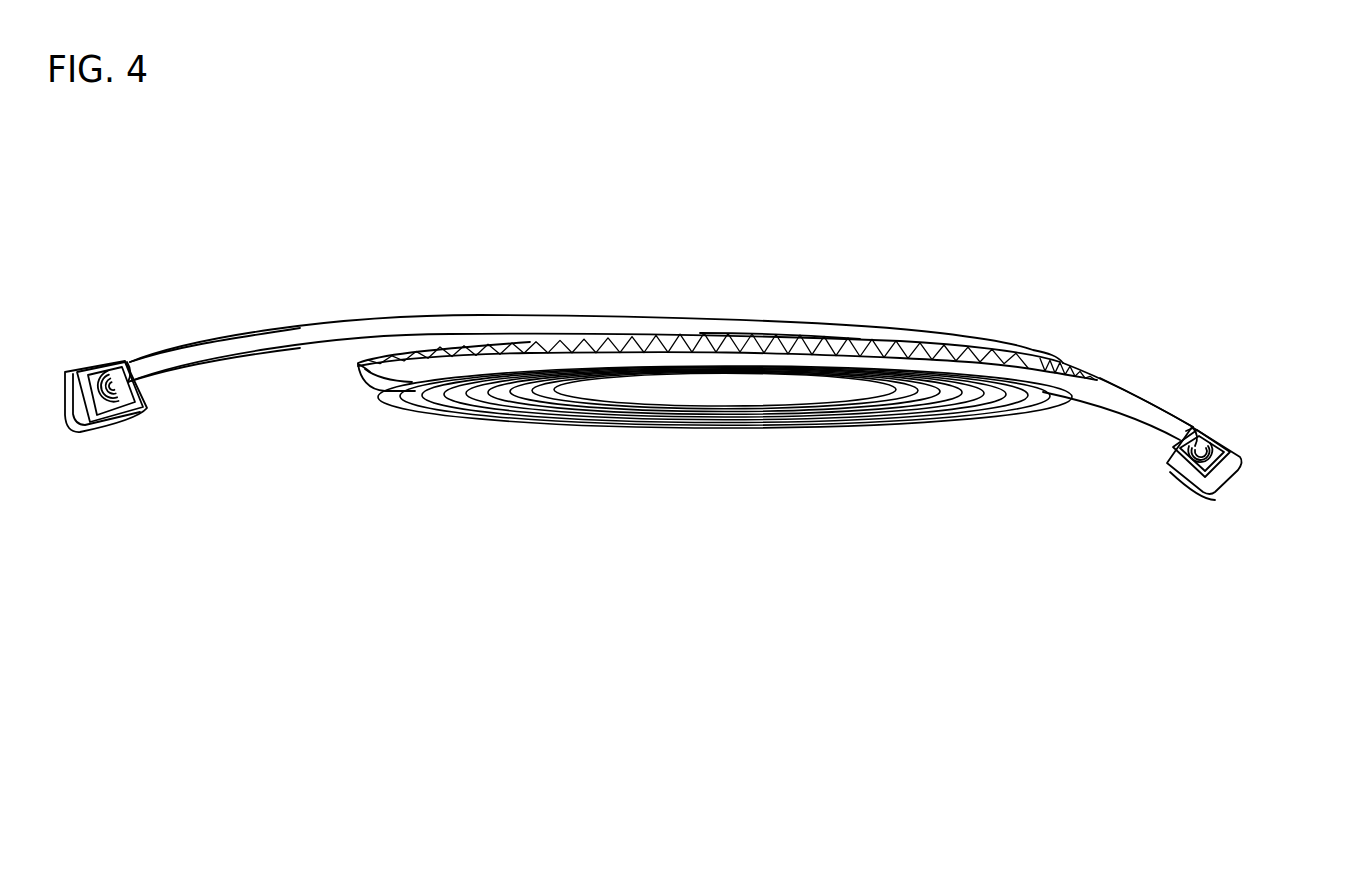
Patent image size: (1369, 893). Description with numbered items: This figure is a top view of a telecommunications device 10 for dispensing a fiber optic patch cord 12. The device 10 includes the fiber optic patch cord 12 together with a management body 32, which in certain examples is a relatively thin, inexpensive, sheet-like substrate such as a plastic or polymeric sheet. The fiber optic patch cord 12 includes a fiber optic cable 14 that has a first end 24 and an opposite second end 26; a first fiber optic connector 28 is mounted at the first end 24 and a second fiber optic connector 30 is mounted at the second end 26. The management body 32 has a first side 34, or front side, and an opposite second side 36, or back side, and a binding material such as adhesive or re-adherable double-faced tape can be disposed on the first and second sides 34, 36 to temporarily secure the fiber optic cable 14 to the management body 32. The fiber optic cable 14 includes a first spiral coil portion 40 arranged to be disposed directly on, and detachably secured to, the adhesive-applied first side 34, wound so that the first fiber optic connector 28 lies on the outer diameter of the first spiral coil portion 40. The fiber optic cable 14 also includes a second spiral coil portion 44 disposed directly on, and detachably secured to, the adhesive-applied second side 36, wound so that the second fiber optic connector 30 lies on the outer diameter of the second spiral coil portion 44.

The telecommunications device 10 is at (1057, 223).
The fiber optic patch cord 12 is at (600, 316).
The fiber optic cable 14 is at (1020, 333).
The first end 24 is at (168, 378).
The second end 26 is at (1175, 398).
The first fiber optic connector 28 is at (107, 438).
The second fiber optic connector 30 is at (1238, 442).
The management body 32 is at (352, 372).
The first side 34 is at (826, 344).
The second side 36 is at (437, 357).
The first spiral coil portion 40 is at (813, 320).
The second spiral coil portion 44 is at (463, 410).